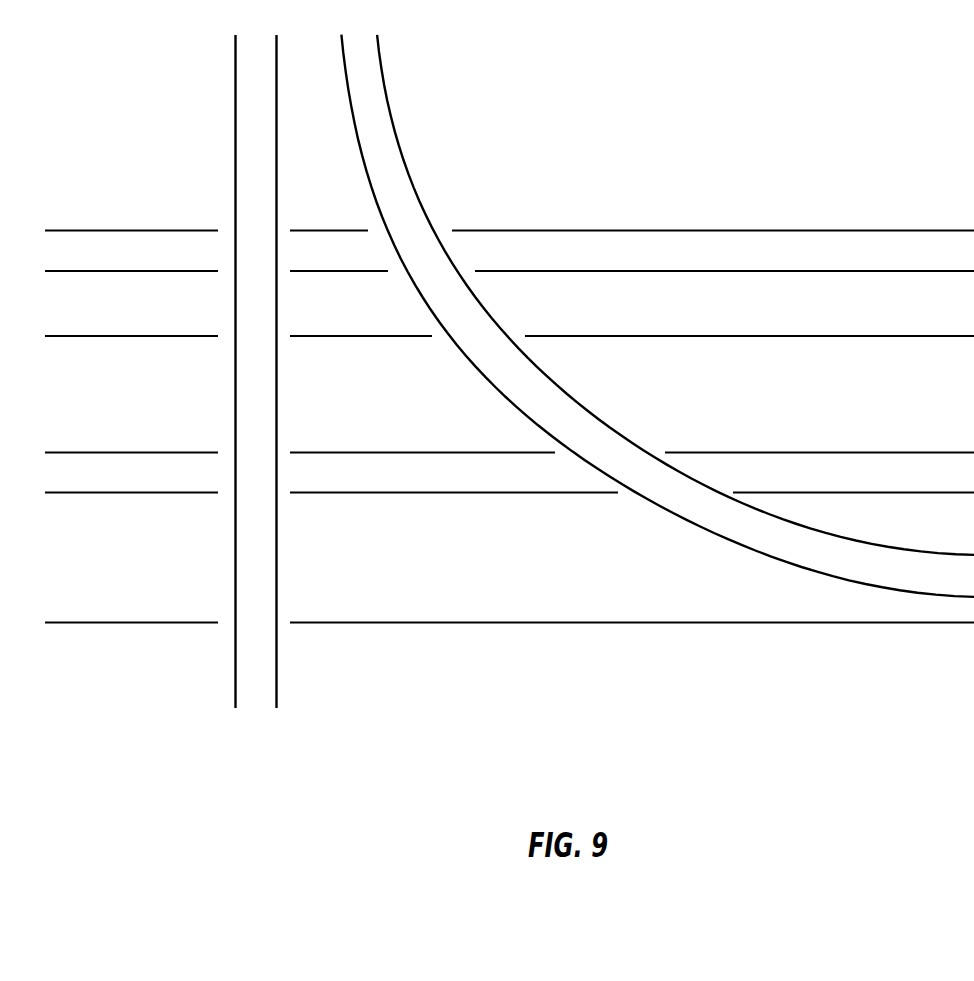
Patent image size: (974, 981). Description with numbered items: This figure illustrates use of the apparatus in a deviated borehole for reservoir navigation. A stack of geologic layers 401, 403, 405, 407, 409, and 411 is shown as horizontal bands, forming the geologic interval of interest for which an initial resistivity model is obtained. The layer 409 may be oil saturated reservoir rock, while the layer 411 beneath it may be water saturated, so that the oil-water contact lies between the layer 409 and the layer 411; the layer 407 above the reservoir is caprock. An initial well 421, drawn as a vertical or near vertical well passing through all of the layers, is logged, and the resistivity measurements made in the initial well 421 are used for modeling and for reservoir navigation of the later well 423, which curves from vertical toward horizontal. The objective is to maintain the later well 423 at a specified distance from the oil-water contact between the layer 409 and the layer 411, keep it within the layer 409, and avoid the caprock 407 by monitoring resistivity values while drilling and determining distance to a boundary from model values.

The layer 401 is at (123, 263).
The layer 403 is at (123, 321).
The layer 405 is at (123, 402).
The caprock layer 407 is at (123, 488).
The oil saturated reservoir rock layer 409 is at (123, 568).
The water saturated layer 411 is at (123, 662).
The initial well 421 is at (240, 145).
The later well 423 is at (388, 140).